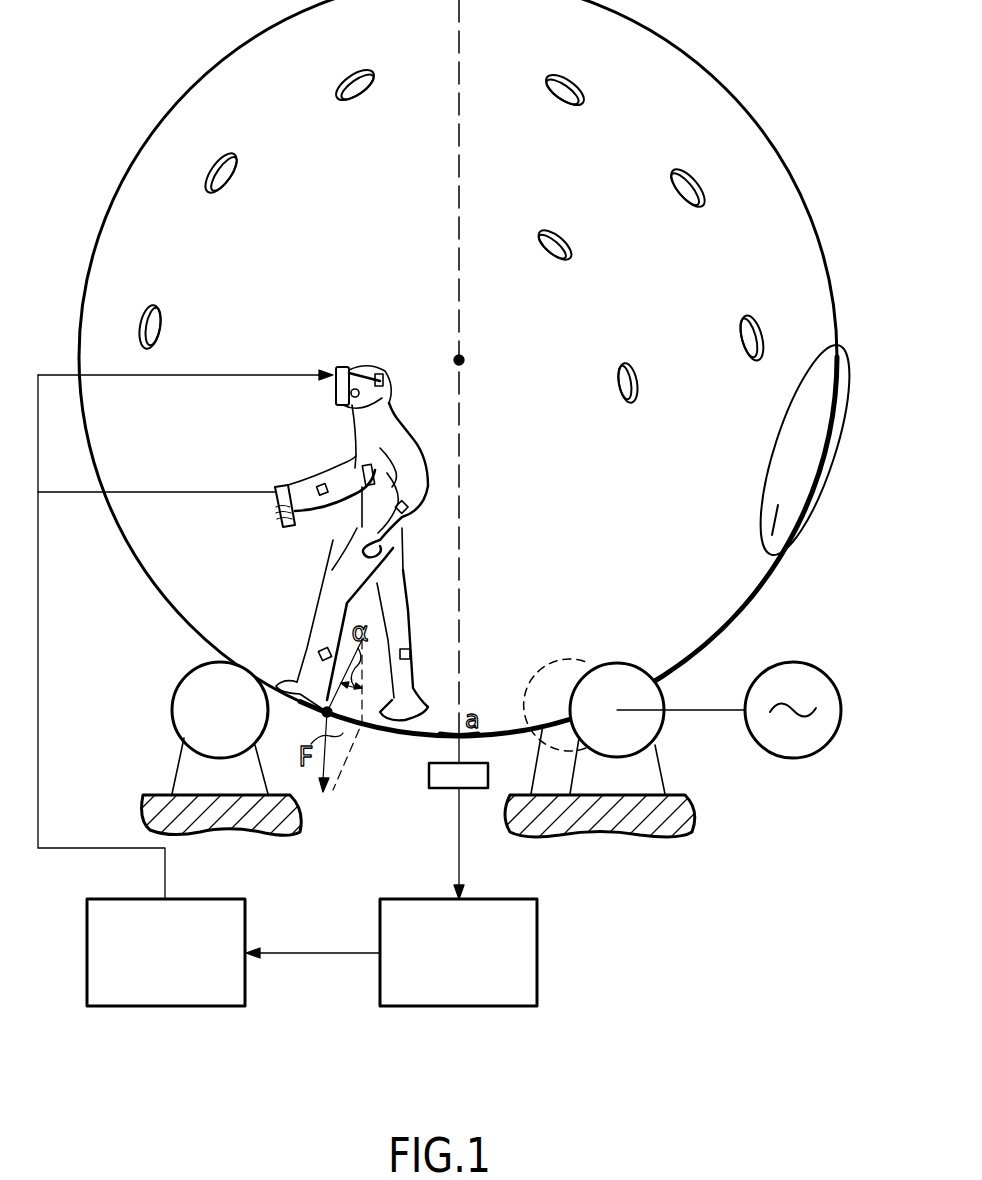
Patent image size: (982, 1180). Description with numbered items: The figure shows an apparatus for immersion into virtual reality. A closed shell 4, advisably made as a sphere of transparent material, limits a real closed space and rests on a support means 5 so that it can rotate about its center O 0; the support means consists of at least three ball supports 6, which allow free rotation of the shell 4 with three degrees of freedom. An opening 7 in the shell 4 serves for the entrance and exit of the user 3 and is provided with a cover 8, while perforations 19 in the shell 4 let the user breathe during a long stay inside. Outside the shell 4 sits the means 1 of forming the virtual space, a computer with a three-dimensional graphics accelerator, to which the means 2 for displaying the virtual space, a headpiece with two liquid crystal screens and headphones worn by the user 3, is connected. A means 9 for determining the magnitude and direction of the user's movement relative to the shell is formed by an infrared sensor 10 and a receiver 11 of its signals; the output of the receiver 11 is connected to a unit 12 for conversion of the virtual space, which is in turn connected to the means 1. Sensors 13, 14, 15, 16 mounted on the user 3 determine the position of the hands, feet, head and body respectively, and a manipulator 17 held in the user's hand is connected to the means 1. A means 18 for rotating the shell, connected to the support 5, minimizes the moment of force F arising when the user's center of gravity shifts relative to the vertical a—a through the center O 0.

The center of the shell 0 is at (460, 359).
The means of forming a virtual space 1 is at (155, 981).
The means for displaying the virtual space 2 is at (350, 371).
The user 3 is at (387, 432).
The closed shell 4 is at (714, 77).
The support means 5 is at (160, 683).
The ball supports 6 is at (178, 738).
The opening 7 is at (843, 347).
The cover 8 is at (788, 512).
The means for determining movement of the user 9 is at (474, 695).
The sensor 10 is at (320, 652).
The receiver 11 is at (441, 789).
The unit for conversion of the virtual space 12 is at (443, 979).
The hand position sensors 13 is at (318, 489).
The foot position sensor 14 is at (386, 366).
The head position sensor 15 is at (367, 487).
The body position sensor 16 is at (342, 397).
The manipulator 17 is at (290, 531).
The means for rotating the shell 18 is at (817, 673).
The perforations 19 is at (688, 192).